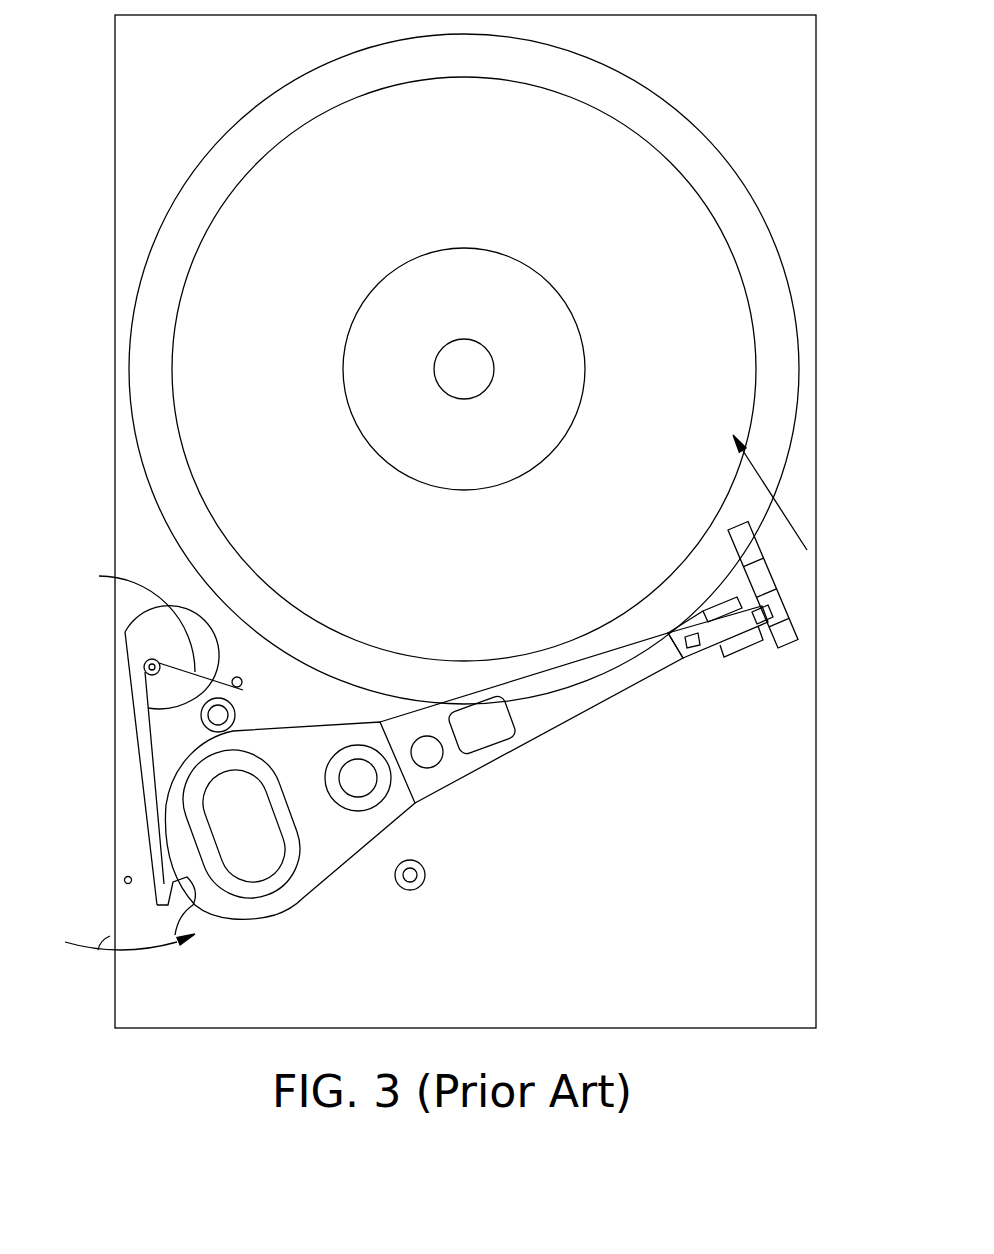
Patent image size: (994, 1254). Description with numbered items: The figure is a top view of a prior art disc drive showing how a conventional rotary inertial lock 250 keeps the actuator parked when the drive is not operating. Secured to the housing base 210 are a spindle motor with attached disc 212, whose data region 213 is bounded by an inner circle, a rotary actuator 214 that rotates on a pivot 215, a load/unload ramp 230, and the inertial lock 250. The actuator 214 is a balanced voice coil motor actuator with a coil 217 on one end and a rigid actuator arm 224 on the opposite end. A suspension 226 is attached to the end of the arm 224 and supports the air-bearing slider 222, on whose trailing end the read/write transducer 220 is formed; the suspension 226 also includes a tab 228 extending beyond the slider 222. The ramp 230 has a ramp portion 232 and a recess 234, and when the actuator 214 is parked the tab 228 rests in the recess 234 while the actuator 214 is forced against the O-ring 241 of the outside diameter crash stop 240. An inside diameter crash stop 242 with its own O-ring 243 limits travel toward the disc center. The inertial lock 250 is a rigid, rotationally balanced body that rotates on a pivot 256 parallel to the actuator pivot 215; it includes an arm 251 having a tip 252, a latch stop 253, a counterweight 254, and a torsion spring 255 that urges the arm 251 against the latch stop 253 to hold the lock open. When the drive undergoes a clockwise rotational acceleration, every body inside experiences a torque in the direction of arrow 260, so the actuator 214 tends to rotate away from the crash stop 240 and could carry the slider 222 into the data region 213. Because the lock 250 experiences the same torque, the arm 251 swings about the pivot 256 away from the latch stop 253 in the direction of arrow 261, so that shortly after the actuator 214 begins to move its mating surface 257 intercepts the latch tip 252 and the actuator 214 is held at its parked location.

The housing base 210 is at (812, 985).
The disc 212 is at (773, 317).
The data region 213 is at (700, 242).
The rotary actuator 214 is at (258, 922).
The pivot 215 is at (355, 787).
The coil 217 is at (238, 892).
The transducer 220 is at (713, 650).
The slider 222 is at (750, 645).
The actuator arm 224 is at (555, 712).
The suspension 226 is at (692, 660).
The tab 228 is at (773, 608).
The load/unload ramp 230 is at (785, 636).
The ramp portion 232 is at (753, 548).
The recess 234 is at (767, 593).
The outside diameter crash stop 240 is at (205, 728).
The O-ring 241 is at (214, 716).
The inside diameter crash stop 242 is at (415, 892).
The O-ring 243 is at (428, 873).
The rotary inertial lock 250 is at (125, 640).
The arm 251 is at (150, 826).
The tip 252 is at (178, 908).
The latch stop 253 is at (122, 881).
The counterweight 254 is at (148, 623).
The torsion spring 255 is at (99, 576).
The pivot 256 is at (142, 671).
The mating surface 257 is at (130, 959).
The arrow 260 is at (778, 492).
The arrow 261 is at (98, 950).